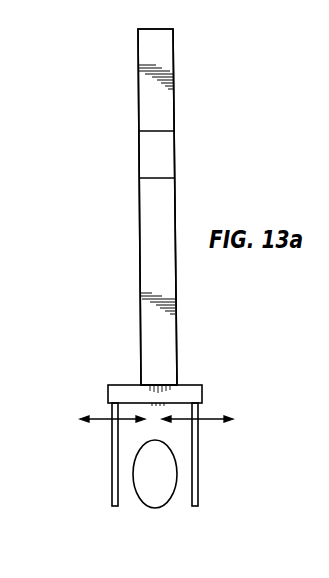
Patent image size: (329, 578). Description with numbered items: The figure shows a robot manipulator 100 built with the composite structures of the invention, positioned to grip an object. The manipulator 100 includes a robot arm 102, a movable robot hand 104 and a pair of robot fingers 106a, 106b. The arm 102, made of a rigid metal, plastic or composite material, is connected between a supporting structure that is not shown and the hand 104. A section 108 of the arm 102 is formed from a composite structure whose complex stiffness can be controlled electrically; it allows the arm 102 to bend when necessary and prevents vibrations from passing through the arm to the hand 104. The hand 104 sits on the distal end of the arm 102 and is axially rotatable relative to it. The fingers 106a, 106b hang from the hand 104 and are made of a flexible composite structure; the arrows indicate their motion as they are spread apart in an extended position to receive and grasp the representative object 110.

The robot manipulator 100 is at (112, 196).
The robot arm 102 is at (175, 201).
The section of the arm 108 is at (175, 153).
The robot hand 104 is at (108, 392).
The robot finger 106a is at (112, 440).
The robot finger 106b is at (198, 452).
The object 110 is at (155, 508).